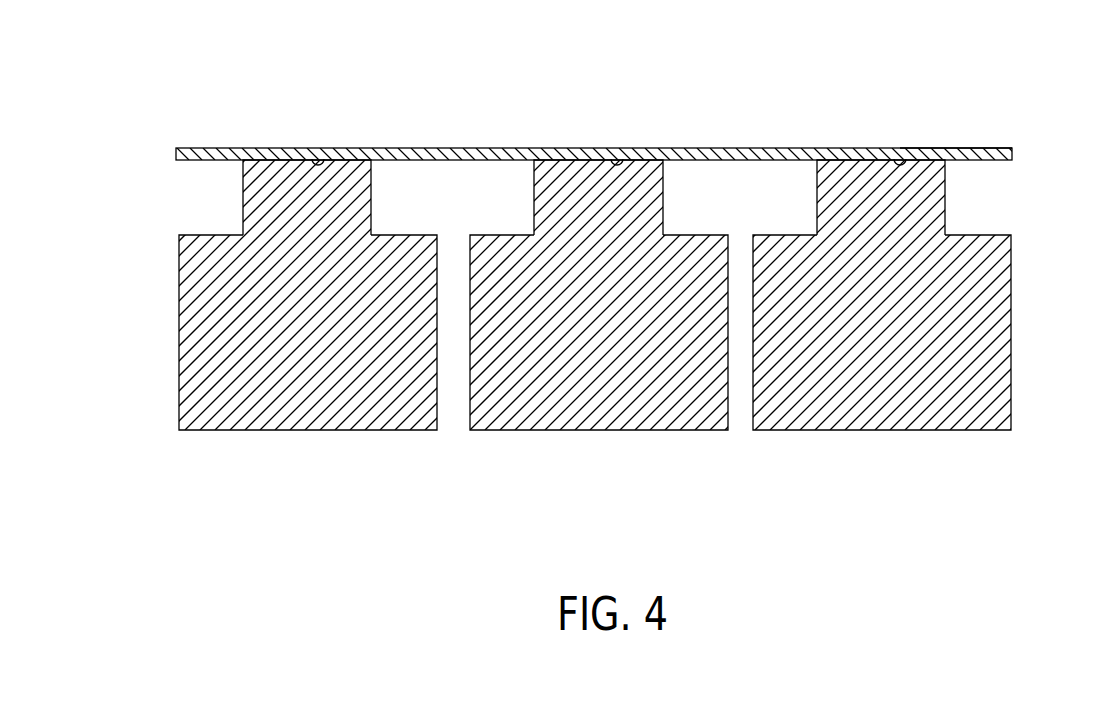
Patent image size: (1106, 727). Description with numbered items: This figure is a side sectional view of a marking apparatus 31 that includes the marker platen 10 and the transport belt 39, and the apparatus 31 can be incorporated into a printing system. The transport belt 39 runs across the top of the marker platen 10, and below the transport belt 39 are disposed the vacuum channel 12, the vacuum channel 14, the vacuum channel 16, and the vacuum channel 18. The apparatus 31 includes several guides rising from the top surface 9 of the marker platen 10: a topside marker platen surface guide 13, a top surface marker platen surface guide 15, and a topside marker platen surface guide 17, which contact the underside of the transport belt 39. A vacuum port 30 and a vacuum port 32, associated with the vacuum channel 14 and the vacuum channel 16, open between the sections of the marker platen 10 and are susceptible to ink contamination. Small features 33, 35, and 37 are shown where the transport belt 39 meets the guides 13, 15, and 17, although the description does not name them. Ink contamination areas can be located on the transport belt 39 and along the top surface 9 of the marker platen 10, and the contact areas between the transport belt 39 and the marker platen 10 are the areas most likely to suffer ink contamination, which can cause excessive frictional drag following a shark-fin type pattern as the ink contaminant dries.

The top surface 9 is at (668, 134).
The marker platen 10 is at (138, 168).
The vacuum channel 12 is at (218, 212).
The topside marker platen surface guide 13 is at (283, 180).
The vacuum channel 14 is at (468, 180).
The top surface marker platen surface guide 15 is at (580, 180).
The vacuum channel 16 is at (755, 180).
The topside marker platen surface guide 17 is at (867, 180).
The vacuum channel 18 is at (977, 197).
The vacuum port 30 is at (461, 422).
The marking apparatus 31 is at (1020, 122).
The vacuum port 32 is at (742, 422).
The first weld 33 is at (320, 158).
The second weld 35 is at (617, 158).
The third weld 37 is at (900, 158).
The transport belt 39 is at (972, 148).